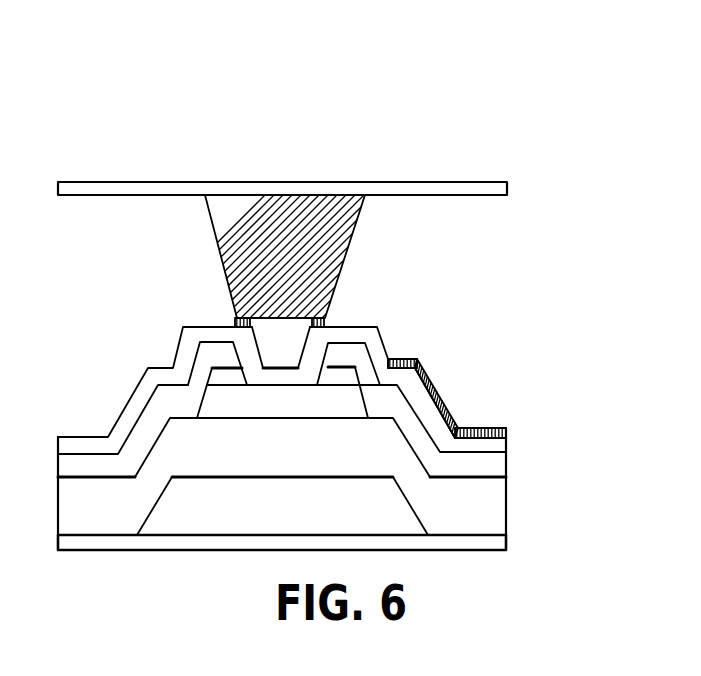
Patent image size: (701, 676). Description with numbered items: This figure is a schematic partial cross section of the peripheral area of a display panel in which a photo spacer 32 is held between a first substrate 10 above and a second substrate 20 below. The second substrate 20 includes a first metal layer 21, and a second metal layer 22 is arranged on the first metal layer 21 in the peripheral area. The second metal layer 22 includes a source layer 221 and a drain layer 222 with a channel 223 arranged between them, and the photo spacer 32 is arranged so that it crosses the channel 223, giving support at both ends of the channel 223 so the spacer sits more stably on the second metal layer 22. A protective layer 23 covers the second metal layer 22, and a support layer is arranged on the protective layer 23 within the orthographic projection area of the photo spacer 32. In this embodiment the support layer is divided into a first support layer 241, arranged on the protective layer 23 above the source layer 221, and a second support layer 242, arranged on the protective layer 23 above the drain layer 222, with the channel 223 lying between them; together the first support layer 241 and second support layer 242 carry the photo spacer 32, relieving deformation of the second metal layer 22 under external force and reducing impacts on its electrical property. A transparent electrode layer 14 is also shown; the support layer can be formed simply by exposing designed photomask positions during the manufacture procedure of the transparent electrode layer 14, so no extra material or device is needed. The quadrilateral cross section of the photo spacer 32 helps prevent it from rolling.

The first substrate 10 is at (282, 139).
The photo spacer 32 is at (322, 163).
The second support layer 242 is at (292, 224).
The first support layer 241 is at (426, 224).
The channel 223 is at (348, 242).
The source layer 221 is at (262, 244).
The drain layer 222 is at (405, 321).
The protective layer 23 is at (330, 390).
The second metal layer 22 is at (466, 354).
The transparent electrode layer 14 is at (522, 401).
The first metal layer 21 is at (285, 433).
The second substrate 20 is at (330, 489).